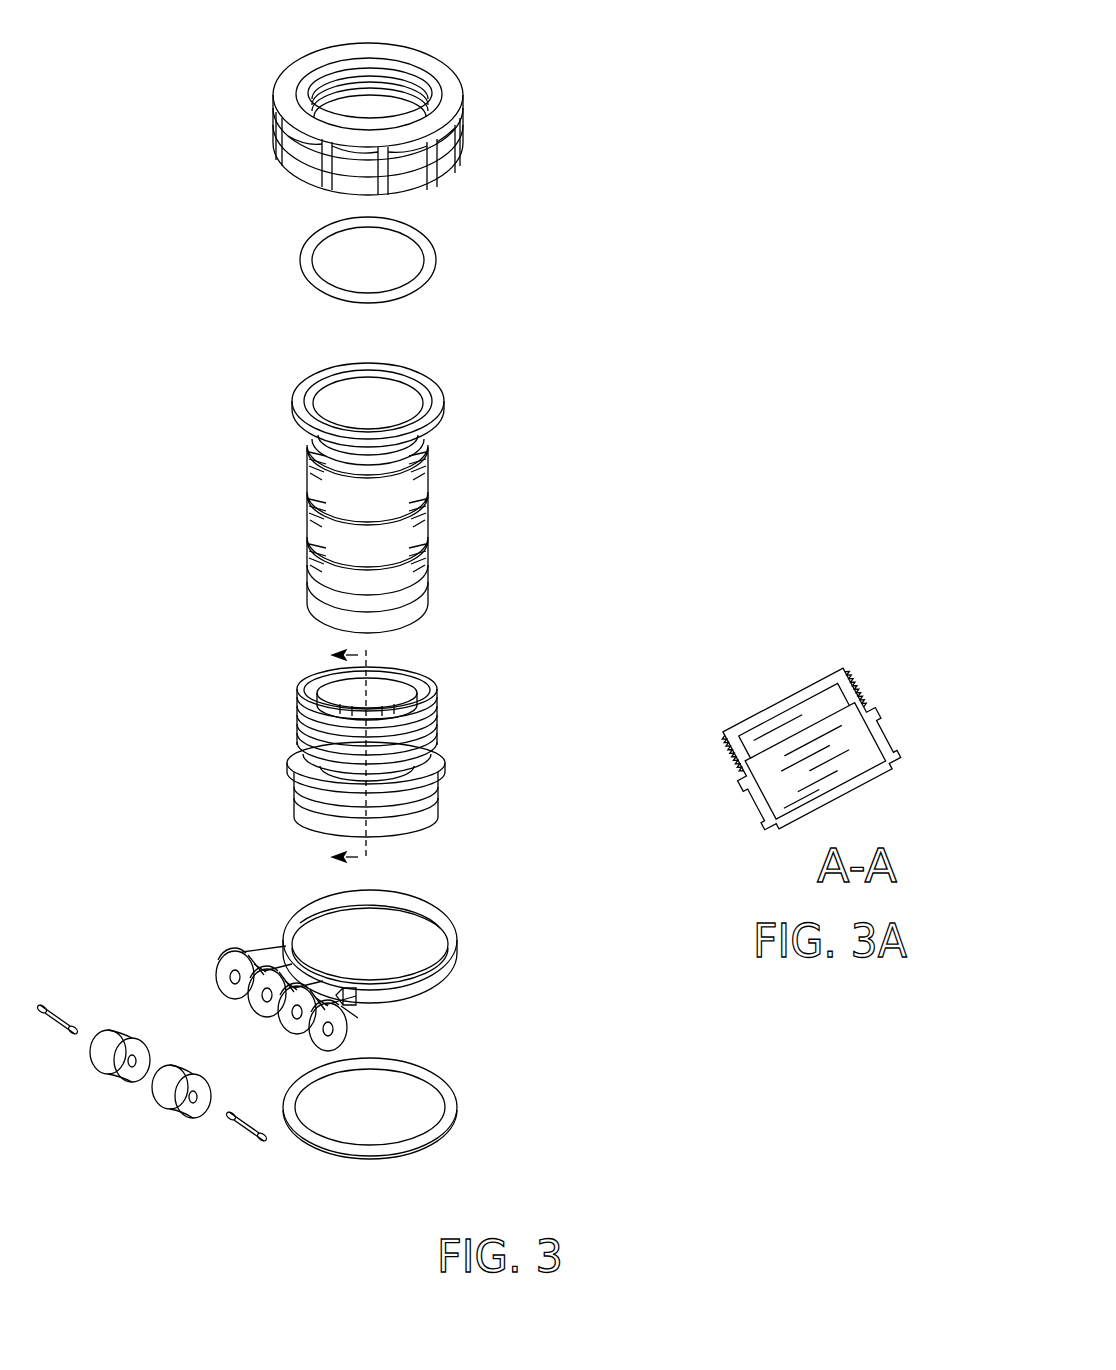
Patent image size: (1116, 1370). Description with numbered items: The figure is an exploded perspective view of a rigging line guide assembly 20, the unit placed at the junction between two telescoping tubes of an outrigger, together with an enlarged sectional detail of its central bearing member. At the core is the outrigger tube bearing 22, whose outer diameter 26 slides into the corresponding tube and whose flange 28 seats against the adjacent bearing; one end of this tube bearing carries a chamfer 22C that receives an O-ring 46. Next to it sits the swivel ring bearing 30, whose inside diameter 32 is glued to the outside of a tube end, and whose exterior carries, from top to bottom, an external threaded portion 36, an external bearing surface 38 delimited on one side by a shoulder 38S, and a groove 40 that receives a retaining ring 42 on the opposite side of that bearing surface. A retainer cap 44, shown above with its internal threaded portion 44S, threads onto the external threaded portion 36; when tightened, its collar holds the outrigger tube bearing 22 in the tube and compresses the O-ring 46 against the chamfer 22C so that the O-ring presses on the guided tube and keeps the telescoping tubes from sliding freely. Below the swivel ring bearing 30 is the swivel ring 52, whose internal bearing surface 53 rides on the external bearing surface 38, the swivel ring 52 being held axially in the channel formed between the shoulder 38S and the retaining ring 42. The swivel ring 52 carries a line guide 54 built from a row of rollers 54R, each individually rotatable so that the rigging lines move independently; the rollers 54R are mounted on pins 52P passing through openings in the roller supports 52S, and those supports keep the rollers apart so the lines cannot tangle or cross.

In FIG. 3, the rigging line guide assembly 20 is at (662, 394).
In FIG. 3, the outrigger tube bearing 22 is at (410, 491).
In FIG. 3, the chamfer 22C is at (430, 378).
In FIG. 3, the outer diameter 26 is at (430, 565).
In FIG. 3, the flange 28 is at (443, 398).
In FIG. 3, the swivel ring bearing 30 is at (324, 757).
In FIG. 3A, the swivel ring bearing 30 is at (807, 741).
In FIG. 3, the inside diameter 32 is at (405, 700).
In FIG. 3, the external threaded portion 36 is at (300, 722).
In FIG. 3A, the external threaded portion 36 is at (845, 670).
In FIG. 3, the external bearing surface 38 is at (300, 788).
In FIG. 3A, the external bearing surface 38 is at (895, 742).
In FIG. 3, the shoulder 38S is at (290, 748).
In FIG. 3A, the shoulder 38S is at (882, 715).
In FIG. 3, the groove 40 is at (310, 818).
In FIG. 3A, the groove 40 is at (770, 828).
In FIG. 3, the retaining ring 42 is at (455, 1115).
In FIG. 3, the retainer cap 44 is at (463, 100).
In FIG. 3, the internal threaded portion 44S is at (330, 88).
In FIG. 3, the O-ring 46 is at (437, 262).
In FIG. 3, the swivel ring 52 is at (325, 957).
In FIG. 3, the pin 52P is at (247, 1143).
In FIG. 3, the roller support 52S is at (345, 1042).
In FIG. 3, the internal bearing surface 53 is at (430, 920).
In FIG. 3, the line guide 54 is at (222, 1006).
In FIG. 3, the roller 54R is at (183, 1118).